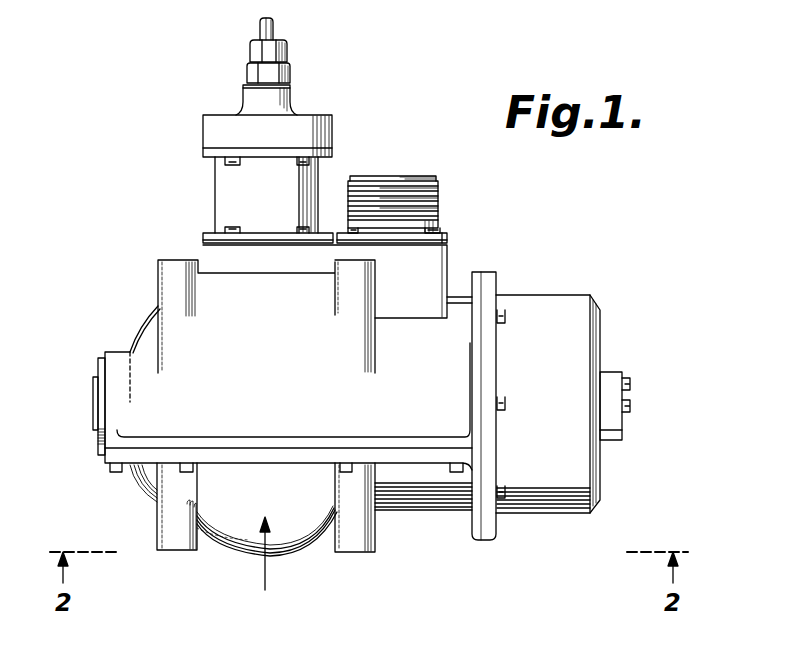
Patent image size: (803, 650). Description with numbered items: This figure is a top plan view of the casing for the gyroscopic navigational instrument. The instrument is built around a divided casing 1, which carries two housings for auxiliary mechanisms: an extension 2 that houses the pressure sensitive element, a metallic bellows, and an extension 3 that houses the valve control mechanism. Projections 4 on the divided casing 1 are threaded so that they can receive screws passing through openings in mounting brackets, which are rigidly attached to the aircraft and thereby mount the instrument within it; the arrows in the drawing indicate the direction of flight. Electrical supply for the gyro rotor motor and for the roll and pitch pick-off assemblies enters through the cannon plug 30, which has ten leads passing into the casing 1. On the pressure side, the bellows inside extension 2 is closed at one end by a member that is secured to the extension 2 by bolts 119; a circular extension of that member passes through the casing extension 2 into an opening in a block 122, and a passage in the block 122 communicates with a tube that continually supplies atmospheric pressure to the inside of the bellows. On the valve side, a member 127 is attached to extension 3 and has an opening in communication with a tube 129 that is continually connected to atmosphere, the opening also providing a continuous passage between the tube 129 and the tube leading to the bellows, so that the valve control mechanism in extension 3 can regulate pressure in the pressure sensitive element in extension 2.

The divided casing 1 is at (146, 340).
The casing extension 2 is at (555, 293).
The casing extension 3 is at (220, 200).
The projections 4 is at (158, 273).
The cannon plug 30 is at (412, 228).
The bolts 119 is at (631, 381).
The block 122 is at (610, 372).
The member 127 is at (318, 132).
The tube 129 is at (275, 26).